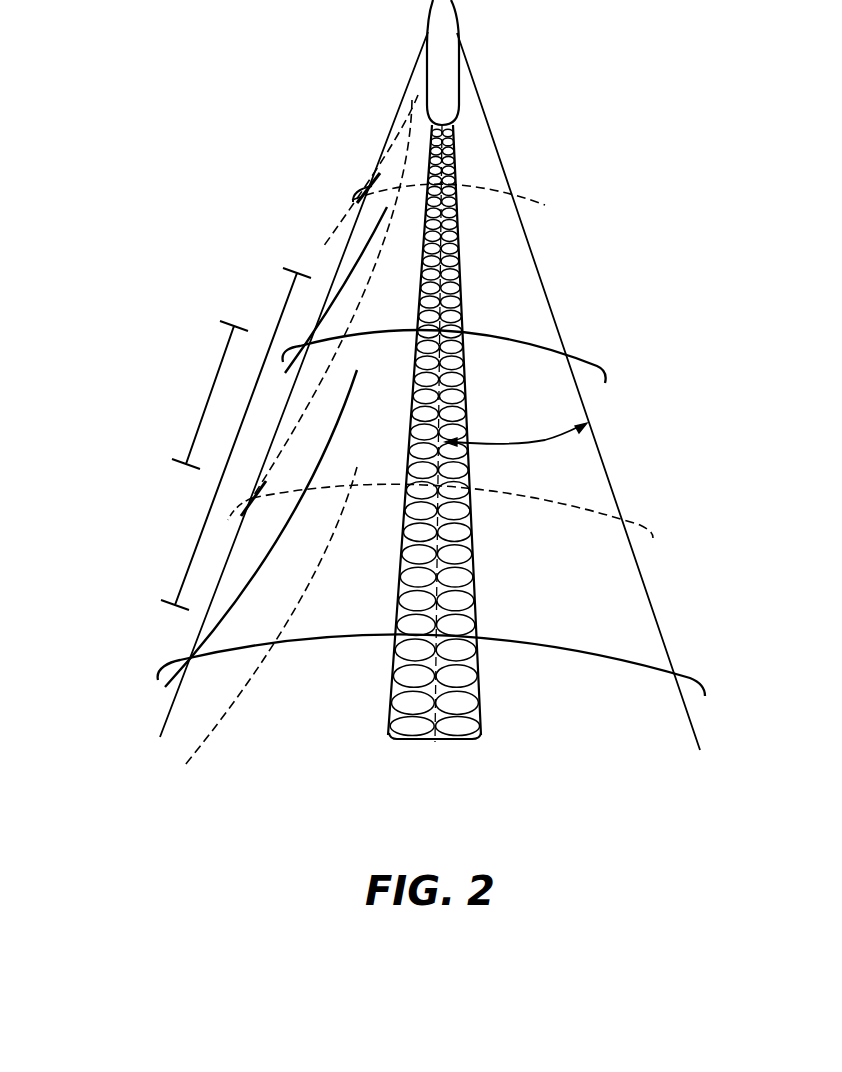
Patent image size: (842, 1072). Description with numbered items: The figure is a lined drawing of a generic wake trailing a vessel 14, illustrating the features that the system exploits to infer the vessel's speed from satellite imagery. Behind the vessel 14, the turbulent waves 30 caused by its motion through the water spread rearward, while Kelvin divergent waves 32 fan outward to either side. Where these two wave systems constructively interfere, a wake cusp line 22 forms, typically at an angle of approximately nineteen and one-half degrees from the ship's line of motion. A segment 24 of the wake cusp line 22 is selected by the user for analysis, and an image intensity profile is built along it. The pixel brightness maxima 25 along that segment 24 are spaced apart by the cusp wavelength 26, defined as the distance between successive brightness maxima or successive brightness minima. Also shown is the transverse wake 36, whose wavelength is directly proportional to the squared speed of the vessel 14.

The vessel 14 is at (468, 72).
The wake cusp line 22 is at (312, 312).
The segment 24 is at (192, 550).
The pixel brightness maxima 25 is at (214, 519).
The cusp wavelength 26 is at (212, 390).
The turbulent waves 30 is at (457, 698).
The Kelvin waves 32 is at (178, 770).
The transverse wake 36 is at (511, 330).